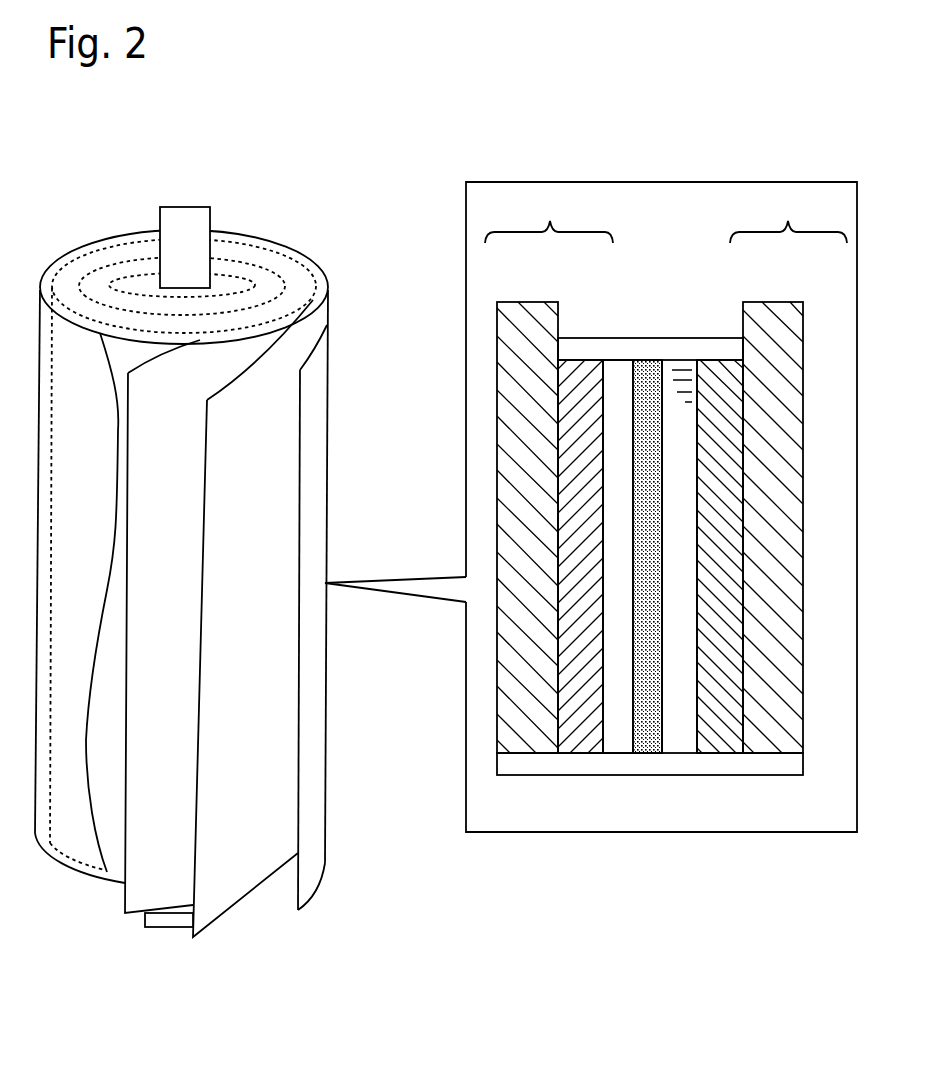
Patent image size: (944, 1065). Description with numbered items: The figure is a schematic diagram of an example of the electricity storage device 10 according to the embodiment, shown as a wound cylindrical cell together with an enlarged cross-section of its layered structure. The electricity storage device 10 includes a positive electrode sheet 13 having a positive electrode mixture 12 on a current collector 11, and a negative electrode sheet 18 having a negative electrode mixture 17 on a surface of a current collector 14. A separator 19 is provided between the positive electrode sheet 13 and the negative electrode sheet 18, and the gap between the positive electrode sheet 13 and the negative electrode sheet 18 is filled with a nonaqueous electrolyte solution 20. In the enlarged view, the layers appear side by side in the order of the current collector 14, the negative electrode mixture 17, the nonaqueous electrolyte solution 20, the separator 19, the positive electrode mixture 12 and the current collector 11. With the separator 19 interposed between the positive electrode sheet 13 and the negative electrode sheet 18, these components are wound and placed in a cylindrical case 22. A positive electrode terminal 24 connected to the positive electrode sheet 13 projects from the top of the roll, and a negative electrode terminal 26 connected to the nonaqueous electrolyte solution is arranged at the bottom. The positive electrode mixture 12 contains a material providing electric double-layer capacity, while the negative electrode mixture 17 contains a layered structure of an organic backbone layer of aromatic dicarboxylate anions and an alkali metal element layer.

The electricity storage device 10 is at (267, 185).
The current collector 11 is at (765, 352).
The positive electrode mixture 12 is at (720, 343).
The positive electrode sheet 13 is at (317, 830).
The current collector 14 is at (518, 333).
The negative electrode mixture 17 is at (585, 370).
The negative electrode sheet 18 is at (162, 875).
The separator 19 is at (247, 852).
The nonaqueous electrolyte solution 20 is at (613, 377).
The cylindrical case 22 is at (78, 248).
The positive electrode terminal 24 is at (182, 206).
The negative electrode terminal 26 is at (167, 928).